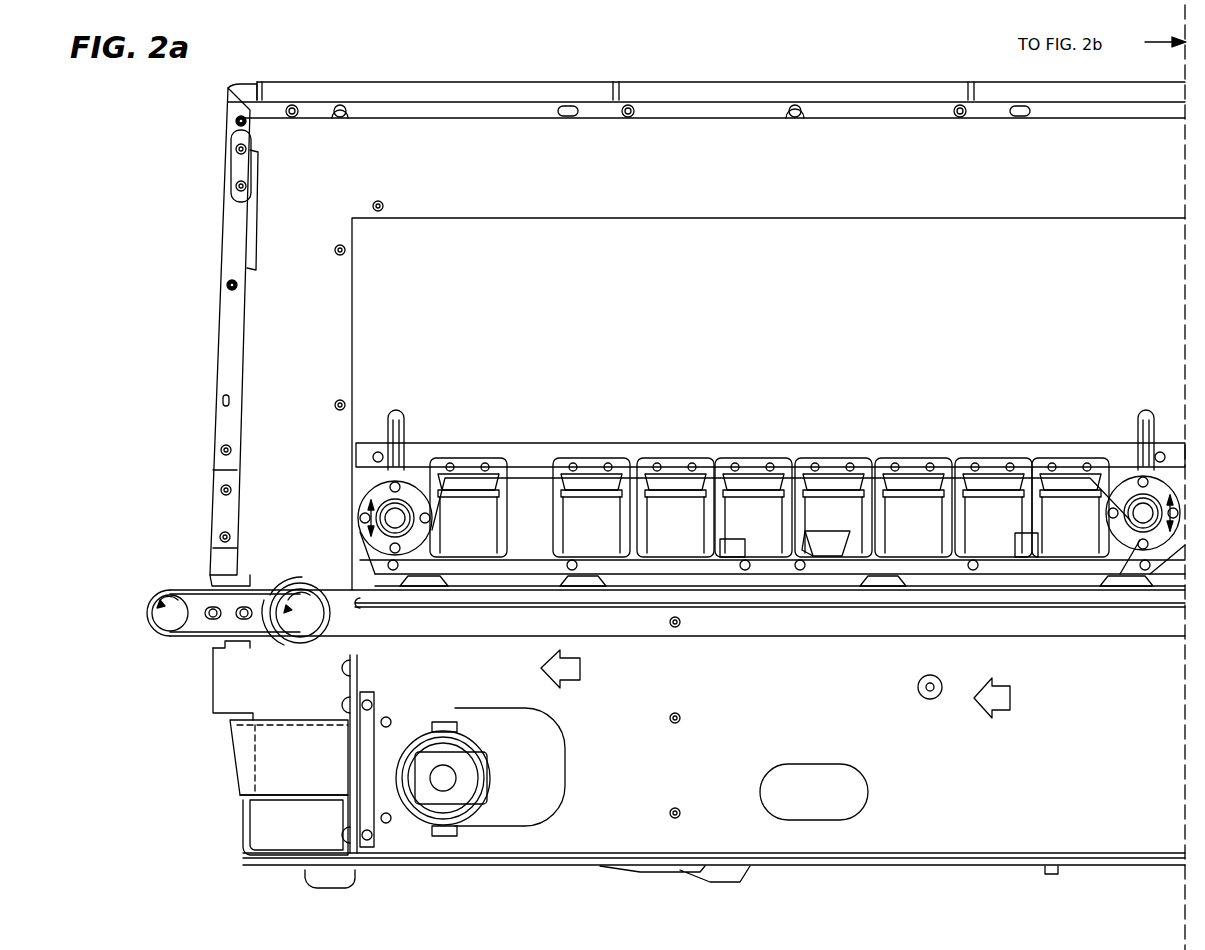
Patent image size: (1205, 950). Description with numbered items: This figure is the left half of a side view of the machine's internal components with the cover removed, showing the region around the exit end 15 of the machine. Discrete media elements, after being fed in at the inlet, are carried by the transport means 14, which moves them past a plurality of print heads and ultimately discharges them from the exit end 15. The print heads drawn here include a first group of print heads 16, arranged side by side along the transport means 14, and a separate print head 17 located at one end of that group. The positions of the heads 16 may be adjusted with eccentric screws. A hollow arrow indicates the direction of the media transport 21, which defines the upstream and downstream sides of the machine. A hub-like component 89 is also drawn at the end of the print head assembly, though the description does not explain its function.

The transport means 14 is at (770, 475).
The exit end 15 is at (255, 525).
The first group of print heads 16 is at (810, 462).
The separate print head 17 is at (478, 464).
The direction of the media transport 21 is at (1000, 712).
The bearing hub 89 is at (410, 545).